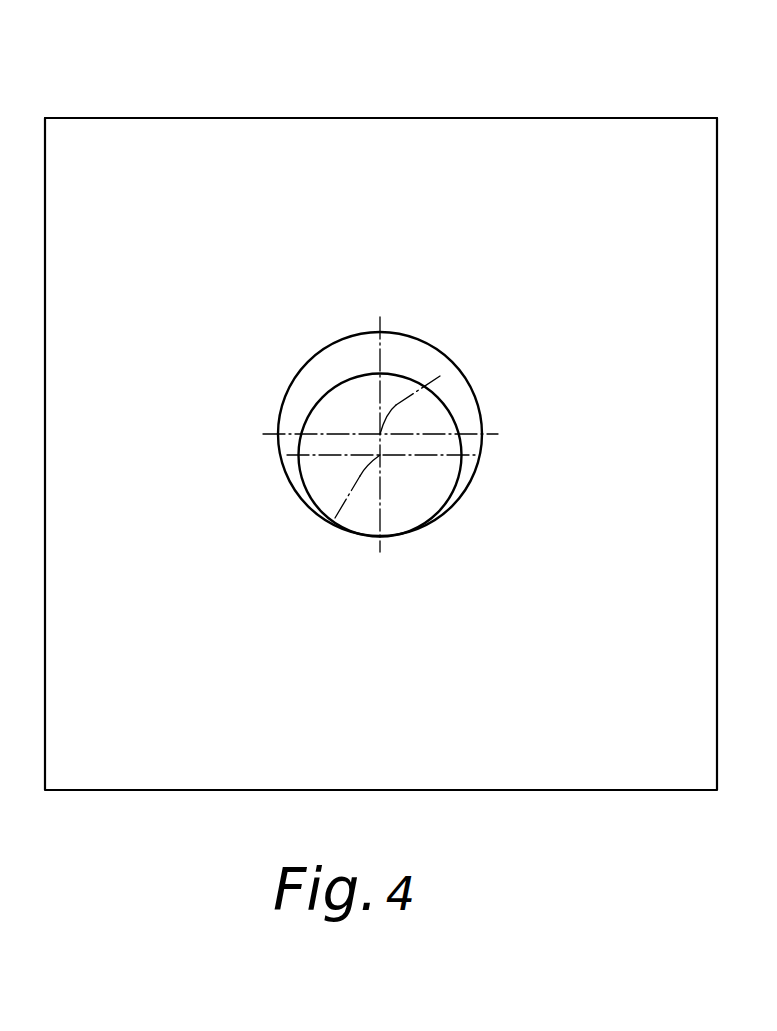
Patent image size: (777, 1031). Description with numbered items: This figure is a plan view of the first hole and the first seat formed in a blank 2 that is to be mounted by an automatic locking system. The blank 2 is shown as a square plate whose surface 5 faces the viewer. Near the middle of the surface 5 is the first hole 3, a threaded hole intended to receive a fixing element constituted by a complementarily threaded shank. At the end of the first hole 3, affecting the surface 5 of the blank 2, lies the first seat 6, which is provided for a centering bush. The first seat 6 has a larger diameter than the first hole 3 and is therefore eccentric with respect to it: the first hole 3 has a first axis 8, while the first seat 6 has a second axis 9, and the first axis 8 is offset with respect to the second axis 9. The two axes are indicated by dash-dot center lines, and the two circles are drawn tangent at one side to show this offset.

The blank 2 is at (181, 112).
The surface 5 is at (535, 158).
The first seat 6 is at (407, 352).
The first hole 3 is at (413, 497).
The second axis 9 is at (440, 377).
The first axis 8 is at (335, 518).